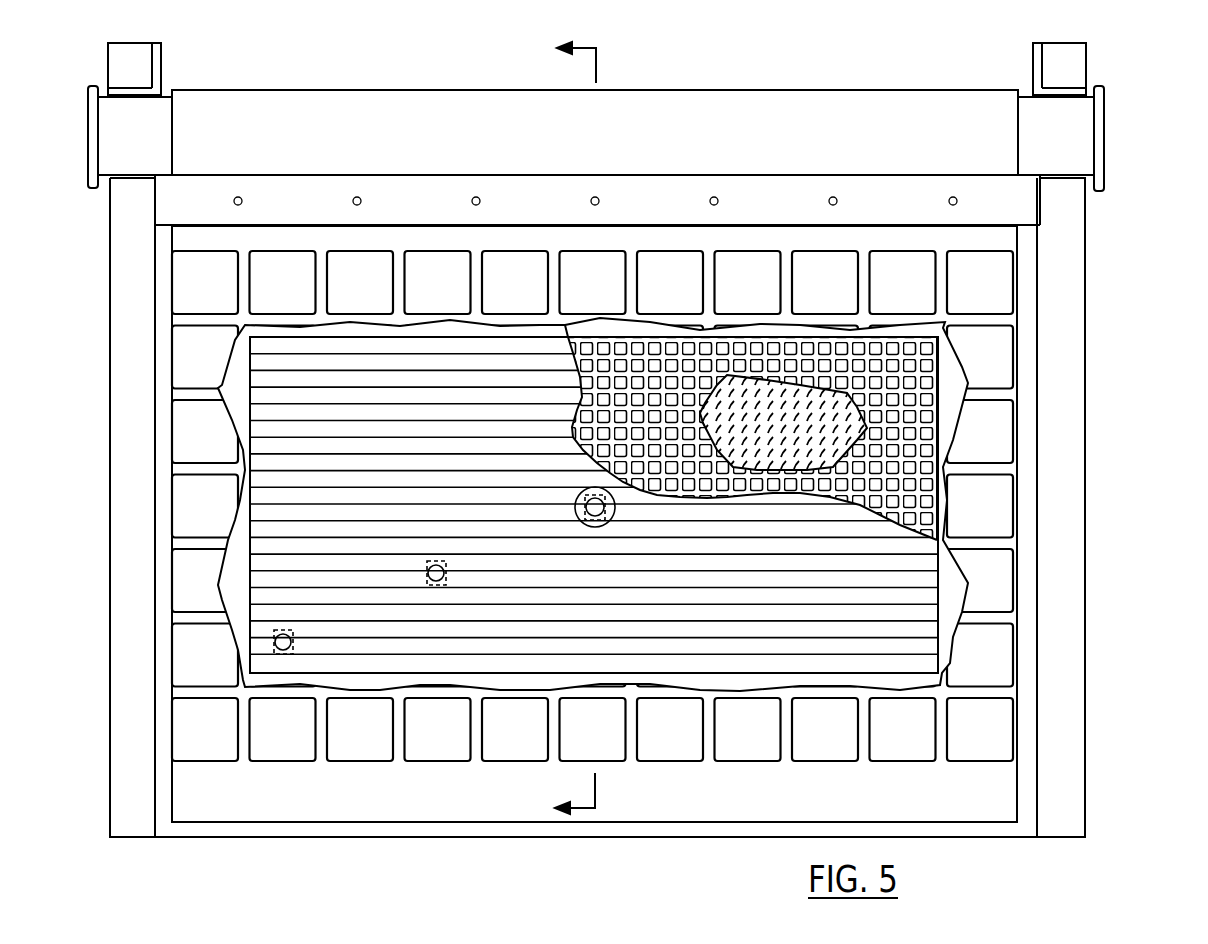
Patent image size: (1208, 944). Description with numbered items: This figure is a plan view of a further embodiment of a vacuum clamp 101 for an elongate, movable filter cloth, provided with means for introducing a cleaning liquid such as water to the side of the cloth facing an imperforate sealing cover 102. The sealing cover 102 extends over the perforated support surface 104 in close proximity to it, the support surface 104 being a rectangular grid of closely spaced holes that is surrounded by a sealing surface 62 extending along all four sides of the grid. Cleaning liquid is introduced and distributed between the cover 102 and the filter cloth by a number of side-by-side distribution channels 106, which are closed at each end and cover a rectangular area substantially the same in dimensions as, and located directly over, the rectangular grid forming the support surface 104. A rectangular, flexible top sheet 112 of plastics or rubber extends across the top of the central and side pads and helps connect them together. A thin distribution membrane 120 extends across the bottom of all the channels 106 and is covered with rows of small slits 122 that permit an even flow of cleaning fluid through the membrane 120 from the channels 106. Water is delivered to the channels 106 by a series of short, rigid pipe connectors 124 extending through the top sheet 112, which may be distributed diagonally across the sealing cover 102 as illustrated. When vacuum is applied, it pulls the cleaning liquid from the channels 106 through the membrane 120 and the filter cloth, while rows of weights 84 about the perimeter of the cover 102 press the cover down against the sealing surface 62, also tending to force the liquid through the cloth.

The vacuum clamp 101 is at (638, 433).
The sealing cover 102 is at (1005, 242).
The top sheet 112 is at (1010, 320).
The weights 84 is at (1002, 742).
The sealing surface 62 is at (958, 585).
The distribution channels 106 is at (925, 598).
The distribution membrane 120 is at (890, 437).
The support surface 104 is at (903, 503).
The slits 122 is at (877, 406).
The pipe connectors 124 is at (275, 632).